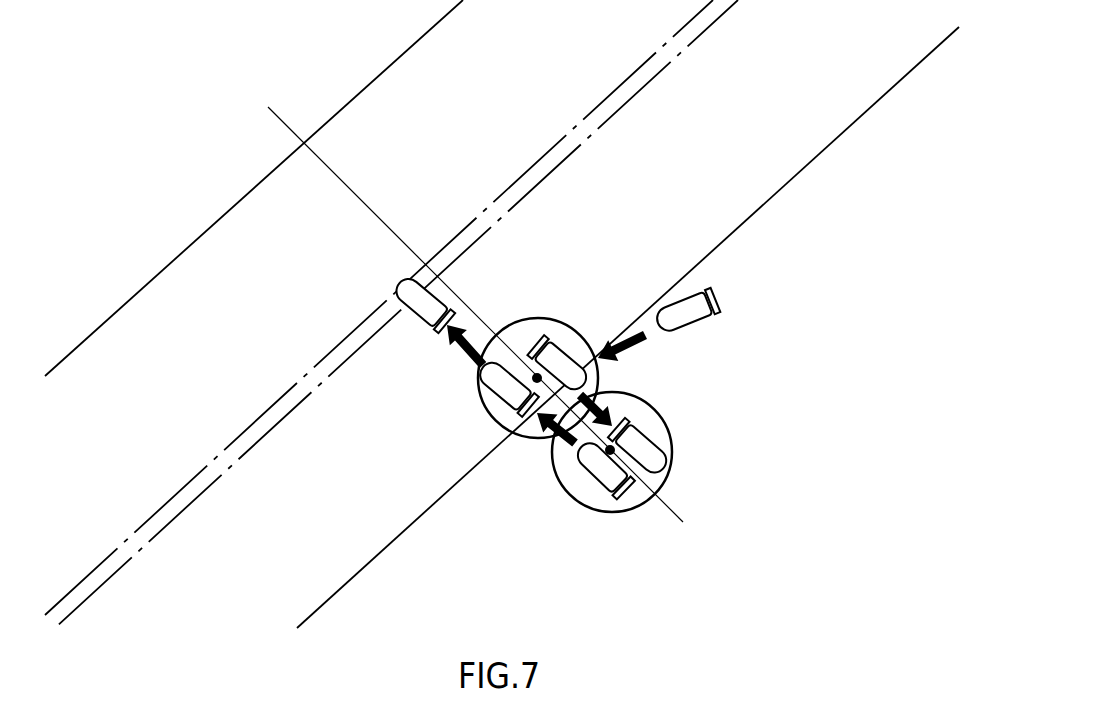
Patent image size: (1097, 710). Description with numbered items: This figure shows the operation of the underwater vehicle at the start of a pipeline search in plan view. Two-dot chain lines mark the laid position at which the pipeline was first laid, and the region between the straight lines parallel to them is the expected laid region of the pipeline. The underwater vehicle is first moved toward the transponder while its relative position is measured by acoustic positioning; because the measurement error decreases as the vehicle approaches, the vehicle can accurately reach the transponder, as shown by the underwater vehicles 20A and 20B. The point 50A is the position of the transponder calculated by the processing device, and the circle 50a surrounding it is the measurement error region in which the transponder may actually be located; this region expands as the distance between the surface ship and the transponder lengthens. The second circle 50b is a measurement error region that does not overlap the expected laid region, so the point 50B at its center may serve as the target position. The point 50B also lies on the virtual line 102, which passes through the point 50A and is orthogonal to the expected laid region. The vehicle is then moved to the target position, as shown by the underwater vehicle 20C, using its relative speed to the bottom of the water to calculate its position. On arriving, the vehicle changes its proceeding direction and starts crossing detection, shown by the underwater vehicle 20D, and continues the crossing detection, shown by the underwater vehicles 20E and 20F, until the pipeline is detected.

The virtual line 102 is at (290, 123).
The underwater vehicle 20A is at (695, 318).
The underwater vehicle 20B is at (563, 362).
The underwater vehicle 20C is at (660, 465).
The underwater vehicle 20D is at (593, 468).
The underwater vehicle 20E is at (507, 387).
The underwater vehicle 20F is at (423, 312).
The calculated transponder position 50A is at (541, 370).
The measurement error region 50a is at (528, 318).
The target position 50B is at (622, 442).
The measurement error region 50b is at (672, 432).